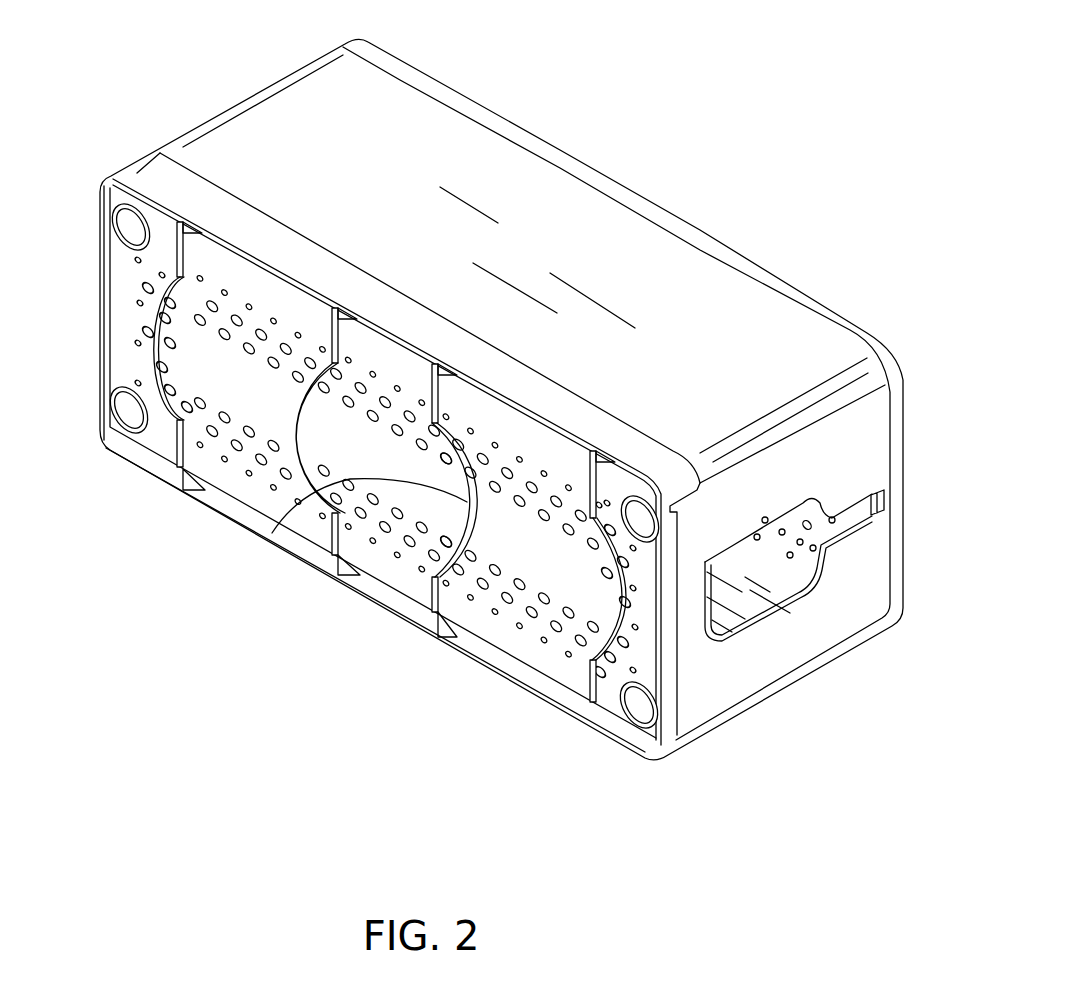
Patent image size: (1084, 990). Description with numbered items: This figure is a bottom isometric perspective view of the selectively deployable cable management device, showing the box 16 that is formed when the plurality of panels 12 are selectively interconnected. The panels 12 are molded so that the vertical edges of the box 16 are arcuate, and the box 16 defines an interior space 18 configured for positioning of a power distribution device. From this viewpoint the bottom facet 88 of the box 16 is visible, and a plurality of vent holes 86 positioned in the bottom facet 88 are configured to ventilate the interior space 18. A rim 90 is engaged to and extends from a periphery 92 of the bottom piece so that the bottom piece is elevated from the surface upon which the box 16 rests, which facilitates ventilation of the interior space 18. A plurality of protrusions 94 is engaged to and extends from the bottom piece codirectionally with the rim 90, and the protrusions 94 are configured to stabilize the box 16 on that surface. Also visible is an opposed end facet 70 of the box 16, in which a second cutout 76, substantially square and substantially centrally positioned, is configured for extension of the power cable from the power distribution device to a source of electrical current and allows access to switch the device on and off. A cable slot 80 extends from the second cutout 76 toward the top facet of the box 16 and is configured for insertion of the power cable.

The panels 12 is at (746, 603).
The box 16 is at (689, 166).
The interior space 18 is at (357, 190).
The opposed end facet 70 is at (832, 604).
The second cutout 76 is at (748, 578).
The cable slot 80 is at (860, 512).
The vent holes 86 is at (545, 597).
The bottom facet 88 is at (231, 406).
The rim 90 is at (100, 337).
The periphery 92 is at (113, 357).
The protrusions 94 is at (330, 440).